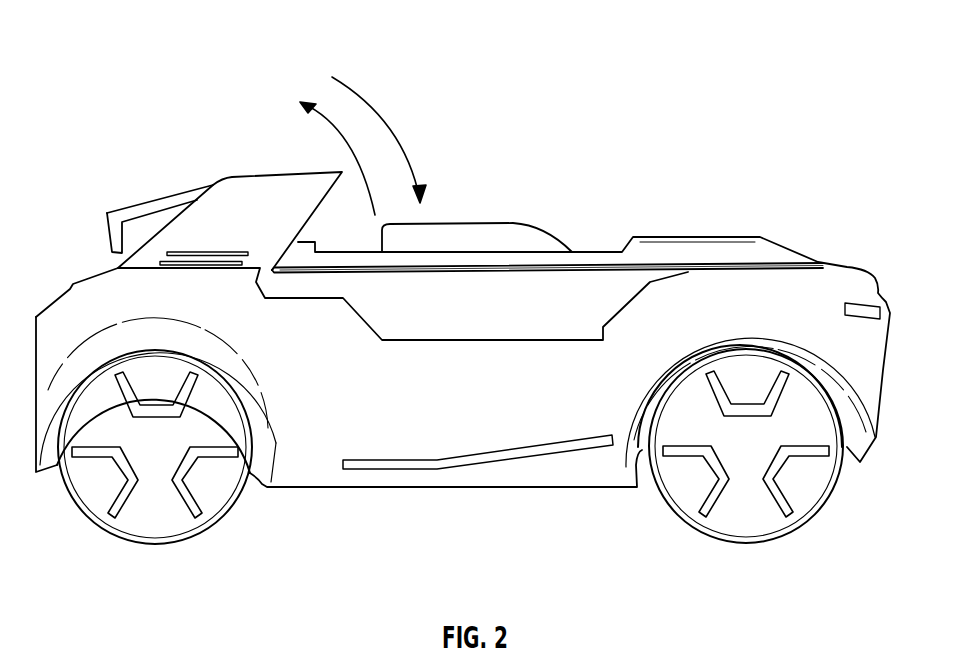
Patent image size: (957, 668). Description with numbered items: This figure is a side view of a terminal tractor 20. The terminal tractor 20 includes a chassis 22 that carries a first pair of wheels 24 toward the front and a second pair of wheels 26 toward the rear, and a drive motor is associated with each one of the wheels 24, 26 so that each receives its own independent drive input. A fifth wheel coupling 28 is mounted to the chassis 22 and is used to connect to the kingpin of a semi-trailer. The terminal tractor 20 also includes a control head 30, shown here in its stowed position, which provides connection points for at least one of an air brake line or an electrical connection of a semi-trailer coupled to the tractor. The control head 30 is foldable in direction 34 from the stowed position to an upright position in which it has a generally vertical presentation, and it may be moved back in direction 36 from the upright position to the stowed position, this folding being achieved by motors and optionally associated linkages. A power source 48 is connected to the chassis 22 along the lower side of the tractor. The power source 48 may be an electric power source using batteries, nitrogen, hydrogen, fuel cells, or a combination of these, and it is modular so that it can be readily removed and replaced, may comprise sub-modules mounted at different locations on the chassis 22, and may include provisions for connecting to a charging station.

The terminal tractor 20 is at (463, 315).
The chassis 22 is at (588, 292).
The first pair of wheels 24 is at (95, 498).
The second pair of wheels 26 is at (713, 507).
The fifth wheel coupling 28 is at (477, 223).
The control head 30 is at (262, 190).
The direction 34 is at (313, 106).
The direction 36 is at (383, 105).
The power source 48 is at (392, 488).